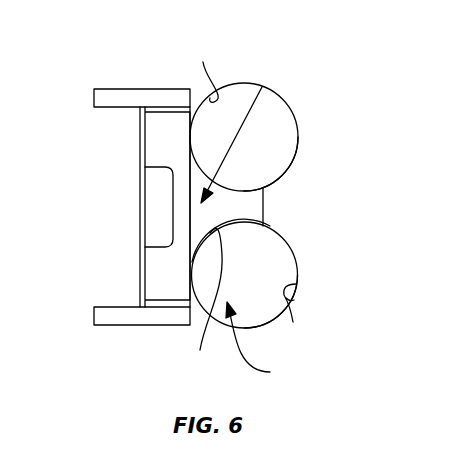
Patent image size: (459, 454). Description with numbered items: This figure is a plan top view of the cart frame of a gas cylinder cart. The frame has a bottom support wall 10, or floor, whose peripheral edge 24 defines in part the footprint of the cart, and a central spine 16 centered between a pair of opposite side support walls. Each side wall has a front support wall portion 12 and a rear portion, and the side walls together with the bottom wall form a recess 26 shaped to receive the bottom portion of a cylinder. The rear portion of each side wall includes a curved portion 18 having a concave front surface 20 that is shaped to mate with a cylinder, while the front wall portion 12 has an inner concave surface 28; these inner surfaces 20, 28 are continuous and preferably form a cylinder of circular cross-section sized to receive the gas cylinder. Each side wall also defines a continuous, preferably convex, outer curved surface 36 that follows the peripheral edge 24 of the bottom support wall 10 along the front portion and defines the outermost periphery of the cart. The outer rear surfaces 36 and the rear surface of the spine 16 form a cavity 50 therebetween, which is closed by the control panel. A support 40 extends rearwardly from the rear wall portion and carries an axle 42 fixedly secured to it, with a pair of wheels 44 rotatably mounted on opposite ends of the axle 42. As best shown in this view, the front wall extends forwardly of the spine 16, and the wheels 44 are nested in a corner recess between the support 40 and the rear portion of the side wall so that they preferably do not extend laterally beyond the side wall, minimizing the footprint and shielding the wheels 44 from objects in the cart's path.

The bottom support wall 10 is at (270, 243).
The front support wall portion 12 is at (298, 133).
The central spine 16 is at (263, 207).
The curved portion 18 is at (188, 135).
The concave front surface 20 is at (204, 206).
The peripheral edge 24 is at (292, 296).
The recess 26 is at (261, 342).
The inner concave surface 28 is at (288, 317).
The outer curved surface 36 is at (297, 153).
The support 40 is at (155, 155).
The axle 42 is at (140, 208).
The wheels 44 is at (94, 97).
The cavity 50 is at (262, 87).